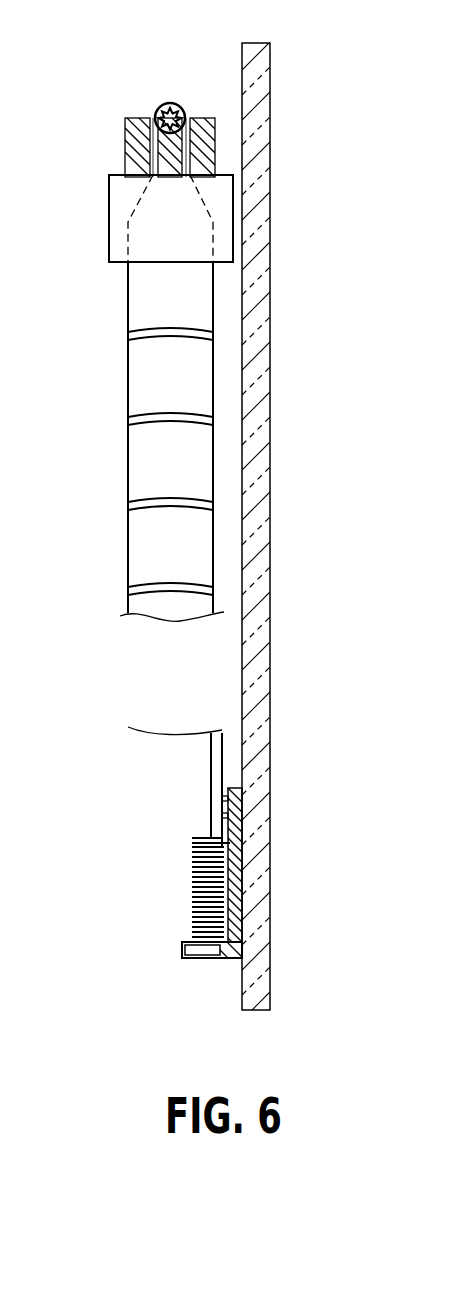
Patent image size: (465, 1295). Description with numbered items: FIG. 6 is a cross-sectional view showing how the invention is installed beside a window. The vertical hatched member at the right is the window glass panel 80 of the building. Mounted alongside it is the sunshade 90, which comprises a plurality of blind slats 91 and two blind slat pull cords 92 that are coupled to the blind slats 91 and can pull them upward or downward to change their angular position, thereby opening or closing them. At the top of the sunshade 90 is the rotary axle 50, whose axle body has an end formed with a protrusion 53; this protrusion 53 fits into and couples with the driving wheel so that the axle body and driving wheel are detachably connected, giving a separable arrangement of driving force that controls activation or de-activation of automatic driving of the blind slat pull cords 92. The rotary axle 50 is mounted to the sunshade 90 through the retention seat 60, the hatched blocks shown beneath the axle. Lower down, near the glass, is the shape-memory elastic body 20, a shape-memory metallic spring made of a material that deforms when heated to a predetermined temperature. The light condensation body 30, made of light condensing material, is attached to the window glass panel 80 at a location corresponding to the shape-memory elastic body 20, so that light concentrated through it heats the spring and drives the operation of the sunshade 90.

The shape-memory elastic body 20 is at (180, 883).
The light condensation body 30 is at (237, 887).
The rotary axle 50 is at (162, 96).
The protrusion 53 is at (179, 105).
The retention seat 60 is at (130, 126).
The window glass panel 80 is at (255, 366).
The sunshade 90 is at (104, 218).
The blind slat 91 is at (165, 332).
The blind slat pull cord 92 is at (128, 305).